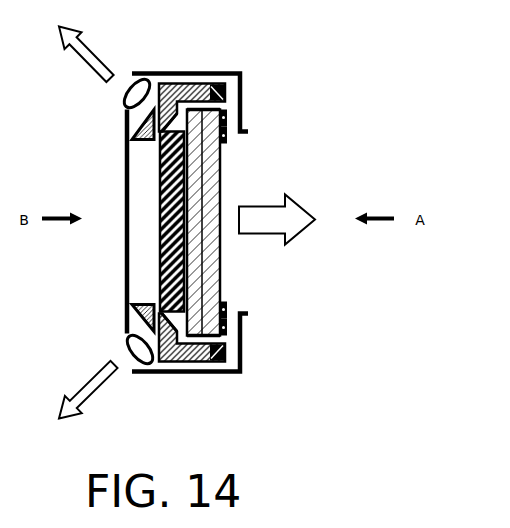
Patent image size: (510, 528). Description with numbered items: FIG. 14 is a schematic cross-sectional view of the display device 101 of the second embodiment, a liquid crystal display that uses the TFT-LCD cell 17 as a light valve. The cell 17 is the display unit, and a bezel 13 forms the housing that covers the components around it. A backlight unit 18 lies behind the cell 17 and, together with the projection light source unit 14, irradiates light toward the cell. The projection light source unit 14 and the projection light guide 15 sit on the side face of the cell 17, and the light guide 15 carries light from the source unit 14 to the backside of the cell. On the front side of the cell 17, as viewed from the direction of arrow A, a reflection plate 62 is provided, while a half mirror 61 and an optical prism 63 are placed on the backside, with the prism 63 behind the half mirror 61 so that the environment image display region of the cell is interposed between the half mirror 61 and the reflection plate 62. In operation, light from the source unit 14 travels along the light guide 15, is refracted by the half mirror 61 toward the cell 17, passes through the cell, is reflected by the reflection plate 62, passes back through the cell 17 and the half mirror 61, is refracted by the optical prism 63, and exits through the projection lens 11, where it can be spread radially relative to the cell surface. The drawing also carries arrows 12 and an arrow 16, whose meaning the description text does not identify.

The display device 101 is at (348, 348).
The projection lens 11 is at (127, 97).
The force direction arrow 12 is at (73, 225).
The bezel 13 is at (243, 337).
The projection light source unit 14 is at (217, 89).
The projection light guide 15 is at (187, 92).
The movement direction arrow 16 is at (277, 208).
The TFT-LCD cell 17 is at (210, 235).
The backlight unit 18 is at (158, 222).
The half mirror 61 is at (240, 129).
The reflection plate 62 is at (225, 113).
The optical prism 63 is at (152, 138).